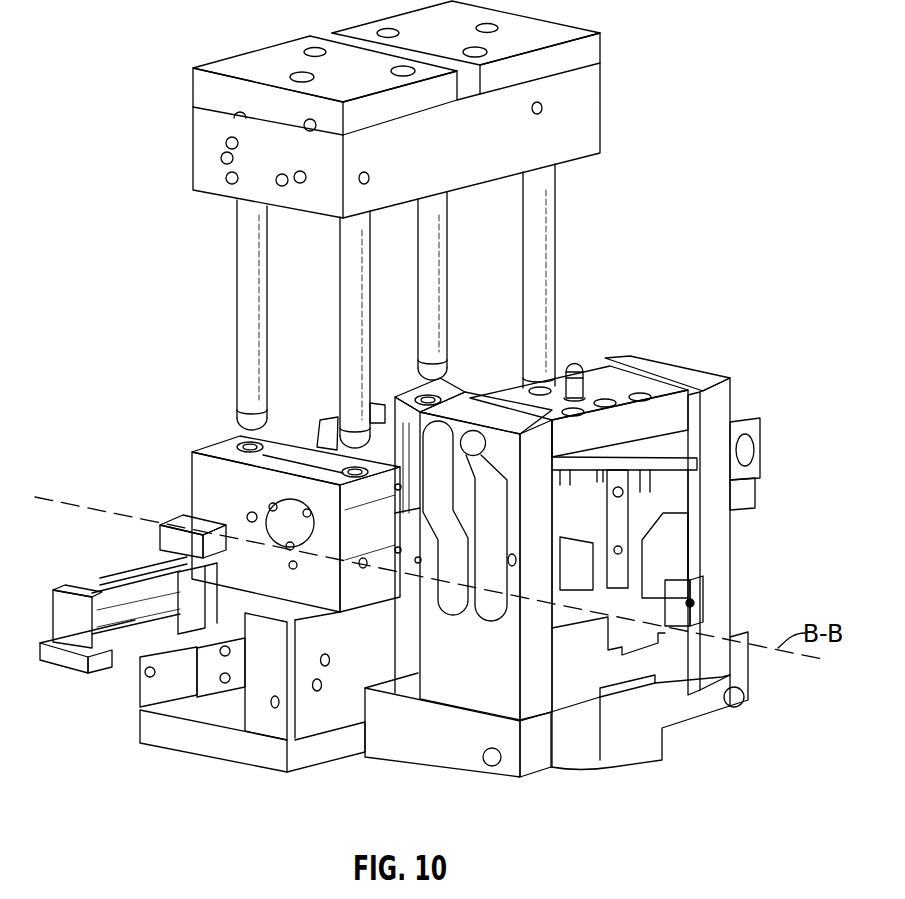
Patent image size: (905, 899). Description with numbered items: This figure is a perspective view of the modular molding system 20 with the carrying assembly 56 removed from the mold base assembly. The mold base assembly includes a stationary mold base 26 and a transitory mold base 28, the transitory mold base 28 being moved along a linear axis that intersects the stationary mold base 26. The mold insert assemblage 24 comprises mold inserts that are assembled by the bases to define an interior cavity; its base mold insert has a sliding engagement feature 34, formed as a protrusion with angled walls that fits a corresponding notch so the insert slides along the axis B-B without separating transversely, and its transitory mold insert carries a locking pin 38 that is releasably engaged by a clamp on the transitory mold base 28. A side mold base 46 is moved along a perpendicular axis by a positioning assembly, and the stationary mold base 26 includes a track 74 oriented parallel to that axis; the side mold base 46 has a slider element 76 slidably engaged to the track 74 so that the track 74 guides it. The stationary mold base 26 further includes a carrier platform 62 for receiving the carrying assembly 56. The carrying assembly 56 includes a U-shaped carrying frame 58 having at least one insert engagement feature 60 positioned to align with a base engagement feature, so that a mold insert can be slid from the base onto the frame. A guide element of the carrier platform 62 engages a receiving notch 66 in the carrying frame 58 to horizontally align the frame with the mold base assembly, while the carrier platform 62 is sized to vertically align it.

The modular molding system 20 is at (676, 154).
The mold insert assemblage 24 is at (591, 364).
The stationary mold base 26 is at (255, 752).
The transitory mold base 28 is at (598, 55).
The sliding engagement feature 34 is at (692, 600).
The locking pin 38 is at (580, 360).
The side mold base 46 is at (194, 452).
The carrying assembly 56 is at (716, 676).
The carrying frame 58 is at (688, 376).
The insert engagement feature 60 is at (735, 540).
The carrier platform 62 is at (430, 770).
The receiving notch 66 is at (640, 690).
The track 74 is at (215, 588).
The slider element 76 is at (218, 582).